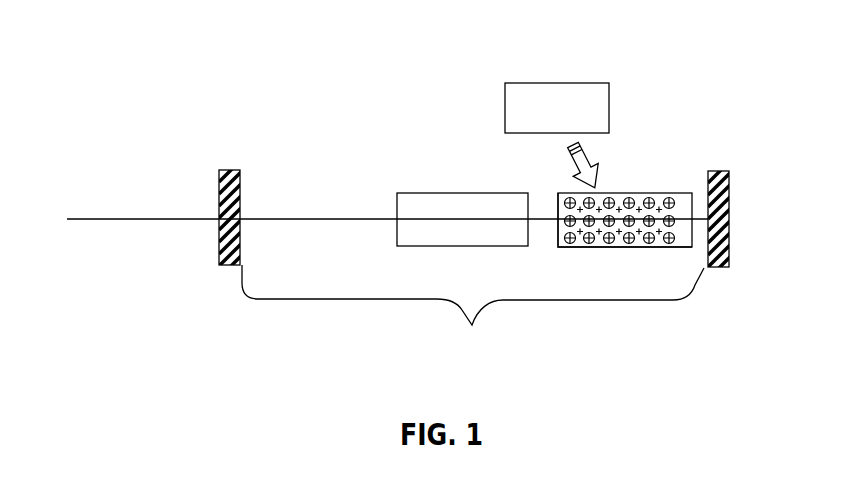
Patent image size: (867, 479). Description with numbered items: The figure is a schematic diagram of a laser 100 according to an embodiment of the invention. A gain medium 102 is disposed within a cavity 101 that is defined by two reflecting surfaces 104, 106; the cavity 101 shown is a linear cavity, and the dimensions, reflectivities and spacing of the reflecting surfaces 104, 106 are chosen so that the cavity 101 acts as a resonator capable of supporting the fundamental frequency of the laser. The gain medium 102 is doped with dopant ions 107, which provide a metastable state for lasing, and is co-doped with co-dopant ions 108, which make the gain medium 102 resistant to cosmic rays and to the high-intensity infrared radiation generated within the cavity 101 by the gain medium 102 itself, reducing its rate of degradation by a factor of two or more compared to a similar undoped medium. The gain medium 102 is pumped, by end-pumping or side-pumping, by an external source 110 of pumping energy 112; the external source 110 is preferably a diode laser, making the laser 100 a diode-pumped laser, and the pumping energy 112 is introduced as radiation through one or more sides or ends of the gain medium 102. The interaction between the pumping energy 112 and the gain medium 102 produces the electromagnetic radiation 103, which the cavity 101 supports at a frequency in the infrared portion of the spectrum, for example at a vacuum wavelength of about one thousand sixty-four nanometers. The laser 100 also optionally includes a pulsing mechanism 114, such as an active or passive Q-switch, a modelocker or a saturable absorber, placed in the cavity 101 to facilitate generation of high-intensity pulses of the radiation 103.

The laser 100 is at (121, 62).
The cavity 101 is at (472, 322).
The gain medium 102 is at (625, 211).
The electromagnetic radiation 103 is at (340, 219).
The reflecting surface 104 is at (241, 229).
The reflecting surface 106 is at (708, 180).
The dopant ions 107 is at (565, 247).
The co-dopant ions 108 is at (637, 232).
The external source 110 is at (505, 113).
The pumping energy 112 is at (565, 162).
The pulsing mechanism 114 is at (465, 232).